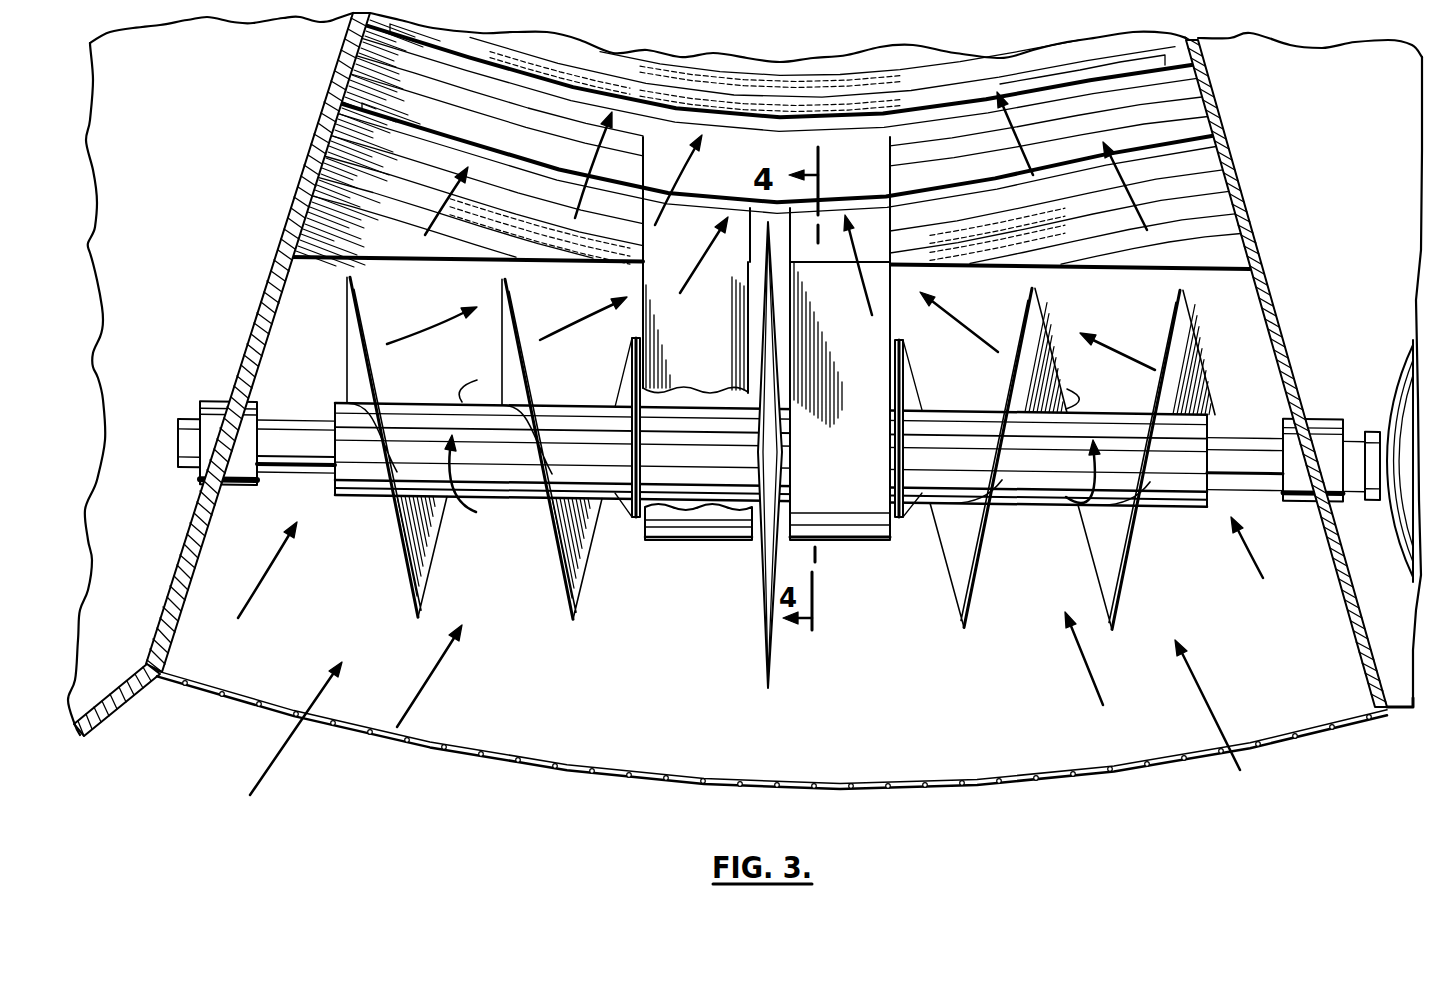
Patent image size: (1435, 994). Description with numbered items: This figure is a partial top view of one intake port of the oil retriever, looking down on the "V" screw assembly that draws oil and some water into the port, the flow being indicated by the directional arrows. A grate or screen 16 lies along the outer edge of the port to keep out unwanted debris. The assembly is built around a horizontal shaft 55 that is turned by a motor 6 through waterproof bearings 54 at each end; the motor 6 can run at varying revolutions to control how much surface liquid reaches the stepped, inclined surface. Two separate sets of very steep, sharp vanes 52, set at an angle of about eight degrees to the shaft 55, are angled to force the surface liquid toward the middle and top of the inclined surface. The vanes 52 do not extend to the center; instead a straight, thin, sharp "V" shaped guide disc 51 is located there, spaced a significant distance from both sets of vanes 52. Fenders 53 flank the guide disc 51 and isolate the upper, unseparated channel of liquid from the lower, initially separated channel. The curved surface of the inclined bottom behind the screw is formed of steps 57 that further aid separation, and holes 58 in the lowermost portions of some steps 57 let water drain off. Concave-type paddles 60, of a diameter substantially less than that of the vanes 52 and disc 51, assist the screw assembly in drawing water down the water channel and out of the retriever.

The motor 6 is at (1401, 375).
The grate or screen 16 is at (690, 780).
The guide disc 51 is at (760, 657).
The vanes 52 is at (573, 573).
The fenders 53 is at (670, 540).
The waterproof bearings 54 is at (215, 420).
The shaft 55 is at (1240, 460).
The steps 57 is at (1240, 196).
The holes 58 is at (1203, 143).
The concave-type paddles 60 is at (663, 470).